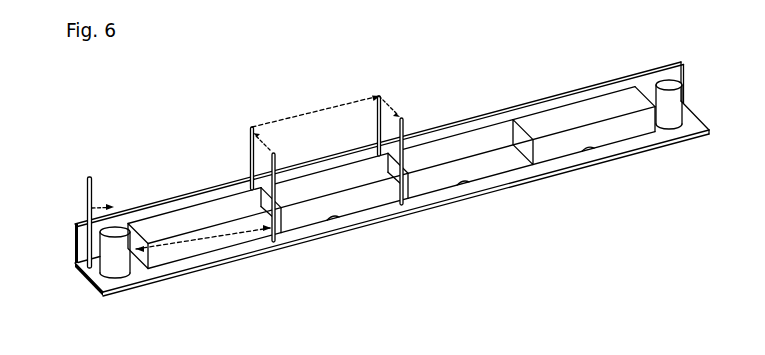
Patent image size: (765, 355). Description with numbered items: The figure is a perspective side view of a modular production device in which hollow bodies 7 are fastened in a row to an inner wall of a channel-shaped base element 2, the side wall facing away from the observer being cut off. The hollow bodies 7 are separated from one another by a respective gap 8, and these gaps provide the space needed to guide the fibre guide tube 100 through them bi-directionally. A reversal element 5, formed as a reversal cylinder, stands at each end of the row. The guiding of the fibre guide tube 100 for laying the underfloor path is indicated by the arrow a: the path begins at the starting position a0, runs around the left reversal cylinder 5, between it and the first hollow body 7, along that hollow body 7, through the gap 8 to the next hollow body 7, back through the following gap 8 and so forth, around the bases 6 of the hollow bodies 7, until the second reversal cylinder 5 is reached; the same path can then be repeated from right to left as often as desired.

The fibre guide tube 100 is at (87, 190).
The starting position a0 is at (88, 177).
The arrow a is at (112, 206).
The base element 2 is at (139, 287).
The reversal element 5 is at (121, 231).
The base 6 is at (203, 253).
The hollow body 7 is at (177, 218).
The gap 8 is at (533, 163).